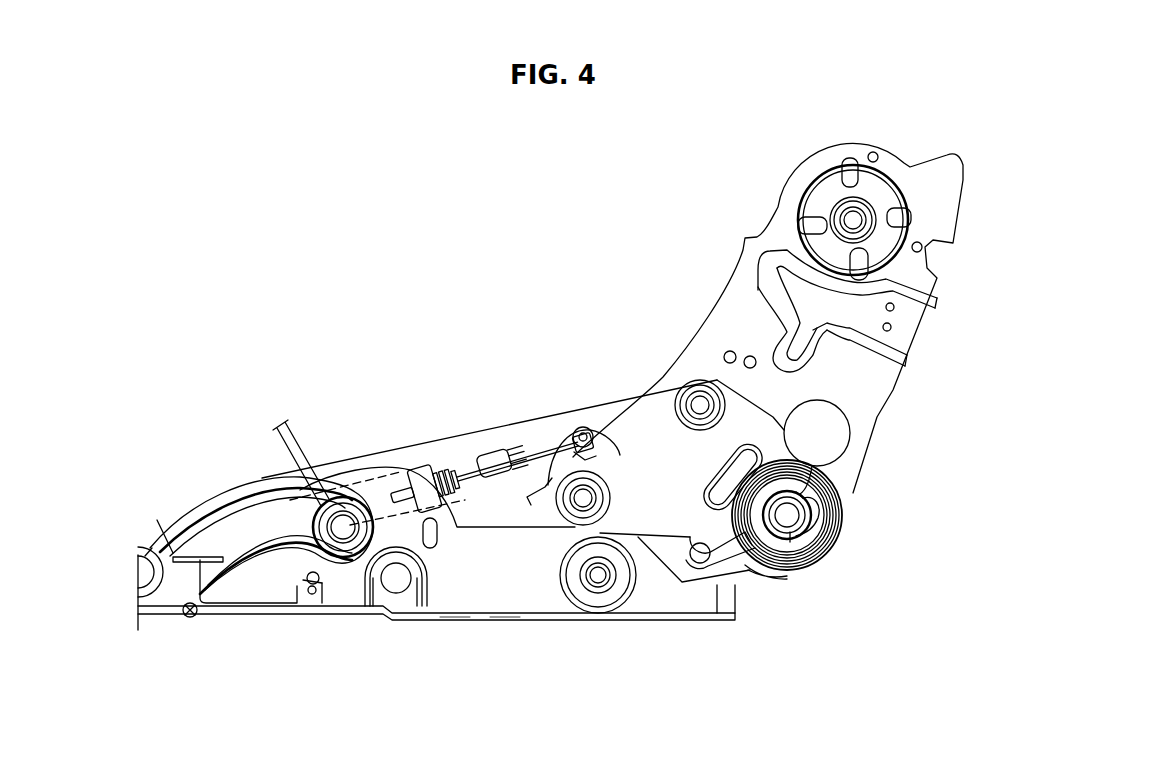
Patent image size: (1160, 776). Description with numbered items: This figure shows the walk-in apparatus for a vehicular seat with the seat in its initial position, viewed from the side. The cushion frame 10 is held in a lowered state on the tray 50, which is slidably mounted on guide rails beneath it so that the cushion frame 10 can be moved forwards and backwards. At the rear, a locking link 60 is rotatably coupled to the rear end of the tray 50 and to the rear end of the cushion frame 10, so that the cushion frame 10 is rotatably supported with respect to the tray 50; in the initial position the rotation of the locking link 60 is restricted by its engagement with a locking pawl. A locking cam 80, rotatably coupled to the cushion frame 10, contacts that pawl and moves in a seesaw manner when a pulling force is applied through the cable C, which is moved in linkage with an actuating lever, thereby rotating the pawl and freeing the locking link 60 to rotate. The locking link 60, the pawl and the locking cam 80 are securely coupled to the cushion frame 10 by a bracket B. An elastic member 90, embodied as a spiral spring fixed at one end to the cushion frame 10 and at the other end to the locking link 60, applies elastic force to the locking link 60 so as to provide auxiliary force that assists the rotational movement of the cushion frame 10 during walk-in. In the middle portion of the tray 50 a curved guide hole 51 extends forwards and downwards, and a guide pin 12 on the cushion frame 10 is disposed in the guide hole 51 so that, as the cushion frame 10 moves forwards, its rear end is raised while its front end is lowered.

The cushion frame 10 is at (745, 300).
The guide pin 12 is at (343, 530).
The tray 50 is at (485, 583).
The guide hole 51 is at (240, 527).
The locking link 60 is at (660, 560).
The locking cam 80 is at (577, 432).
The elastic member 90 is at (828, 567).
The bracket B is at (657, 440).
The cable C is at (303, 452).